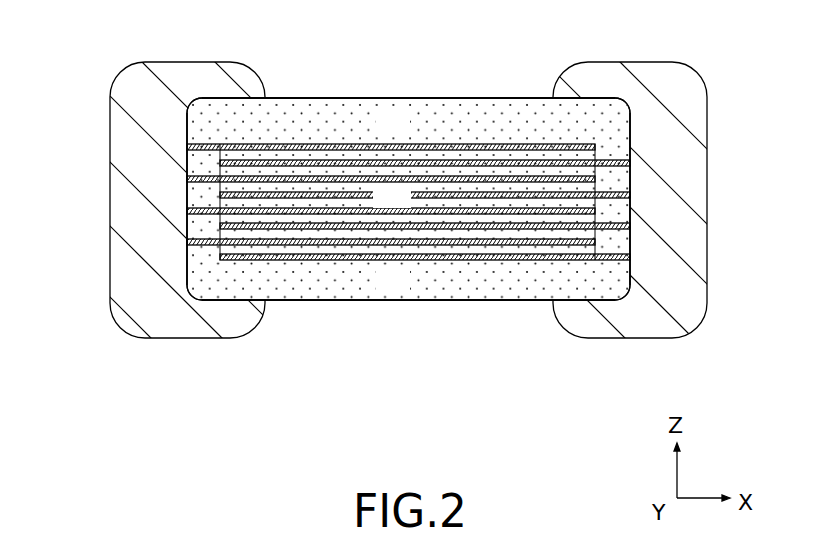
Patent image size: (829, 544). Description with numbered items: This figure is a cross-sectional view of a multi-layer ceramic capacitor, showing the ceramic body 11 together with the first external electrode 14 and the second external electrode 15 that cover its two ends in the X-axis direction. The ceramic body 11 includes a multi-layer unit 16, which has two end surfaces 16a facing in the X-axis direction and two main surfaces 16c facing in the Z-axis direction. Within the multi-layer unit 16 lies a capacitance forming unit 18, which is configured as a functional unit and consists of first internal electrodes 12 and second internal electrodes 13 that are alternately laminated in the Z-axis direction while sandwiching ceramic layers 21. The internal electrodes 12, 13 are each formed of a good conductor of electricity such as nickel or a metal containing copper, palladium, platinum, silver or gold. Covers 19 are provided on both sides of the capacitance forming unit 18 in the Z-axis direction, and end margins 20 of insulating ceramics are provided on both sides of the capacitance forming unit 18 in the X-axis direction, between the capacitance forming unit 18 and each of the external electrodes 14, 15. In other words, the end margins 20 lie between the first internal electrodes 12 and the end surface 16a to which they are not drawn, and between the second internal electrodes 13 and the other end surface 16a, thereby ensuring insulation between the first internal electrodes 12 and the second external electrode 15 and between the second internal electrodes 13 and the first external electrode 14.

The ceramic body 11 is at (410, 203).
The multi-layer unit 16 is at (405, 83).
The first internal electrodes 12 is at (311, 240).
The second internal electrodes 13 is at (493, 256).
The first external electrode 14 is at (148, 78).
The second external electrode 15 is at (663, 75).
The end surfaces 16a is at (187, 182).
The main surfaces 16c is at (293, 97).
The capacitance forming unit 18 is at (408, 196).
The covers 19 is at (409, 133).
The end margins 20 is at (187, 170).
The ceramic layers 21 is at (423, 203).